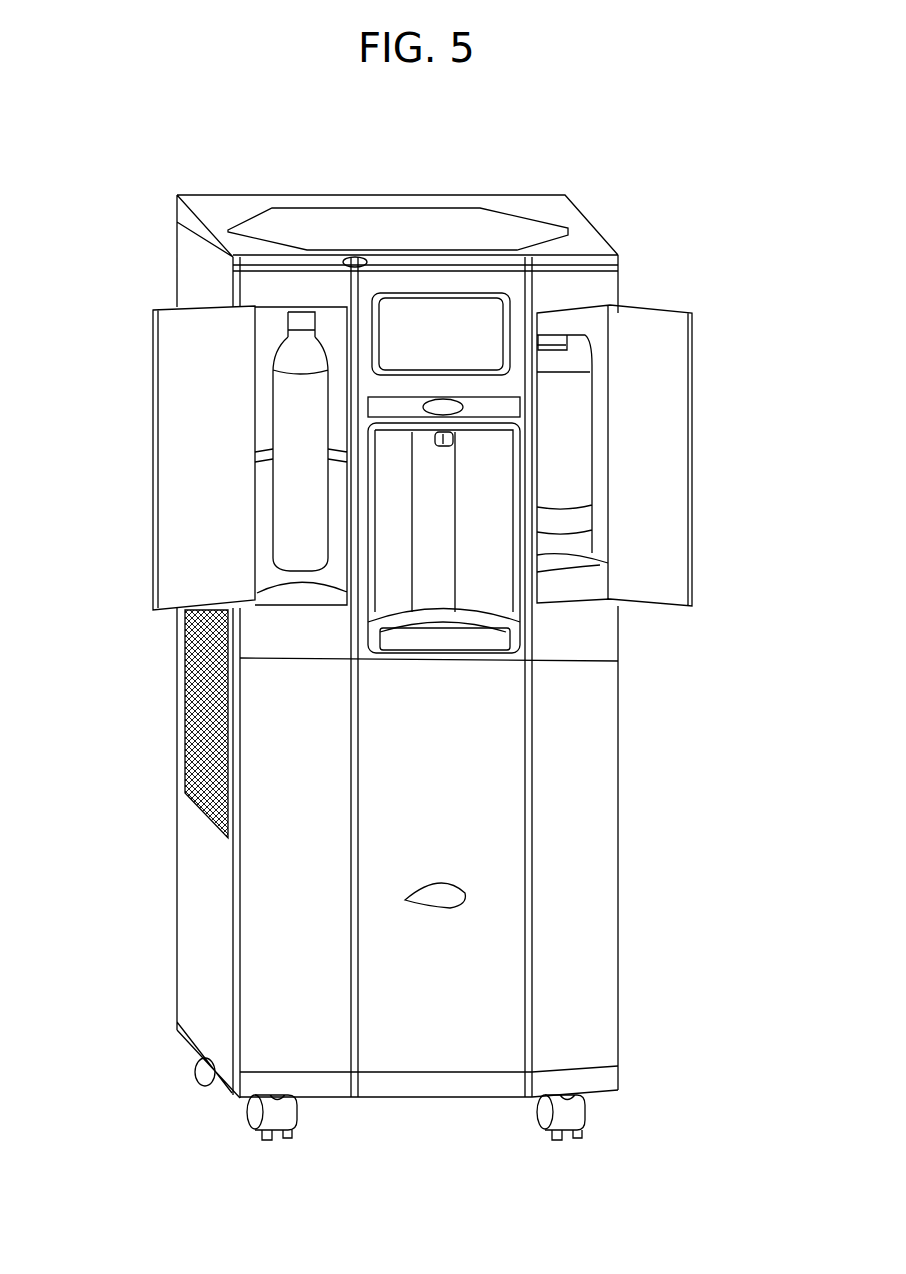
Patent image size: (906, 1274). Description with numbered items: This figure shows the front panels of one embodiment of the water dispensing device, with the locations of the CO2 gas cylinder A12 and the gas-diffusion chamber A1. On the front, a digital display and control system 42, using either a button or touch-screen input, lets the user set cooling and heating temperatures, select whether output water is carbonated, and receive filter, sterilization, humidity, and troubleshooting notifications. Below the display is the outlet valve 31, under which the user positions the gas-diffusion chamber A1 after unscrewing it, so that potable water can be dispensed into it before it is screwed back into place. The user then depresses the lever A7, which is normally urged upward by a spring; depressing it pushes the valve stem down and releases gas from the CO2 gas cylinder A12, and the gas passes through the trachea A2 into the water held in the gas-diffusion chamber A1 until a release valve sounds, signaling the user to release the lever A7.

The lever A7 is at (233, 256).
The CO2 gas cylinder A12 is at (273, 367).
The digital display and control system 42 is at (507, 303).
The outlet valve 31 is at (445, 435).
The trachea A2 is at (567, 443).
The gas-diffusion chamber A1 is at (587, 527).